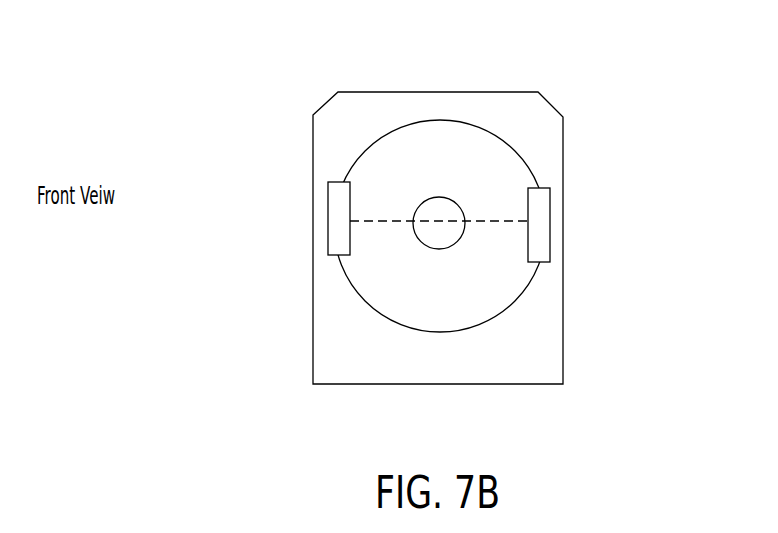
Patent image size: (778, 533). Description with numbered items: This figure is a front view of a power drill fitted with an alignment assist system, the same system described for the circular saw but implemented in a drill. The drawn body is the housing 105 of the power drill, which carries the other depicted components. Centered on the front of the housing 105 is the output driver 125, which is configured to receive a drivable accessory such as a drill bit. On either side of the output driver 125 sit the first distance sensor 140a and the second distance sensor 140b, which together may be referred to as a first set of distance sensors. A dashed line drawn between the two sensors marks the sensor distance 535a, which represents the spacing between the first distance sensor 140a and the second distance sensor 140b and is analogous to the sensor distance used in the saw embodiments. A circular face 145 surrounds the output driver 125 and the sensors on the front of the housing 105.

The housing 105 is at (310, 92).
The output driver 125 is at (462, 235).
The first distance sensor 140a is at (328, 216).
The second distance sensor 140b is at (550, 226).
The circular face / ring 145 is at (518, 304).
The sensor distance 535a is at (381, 209).